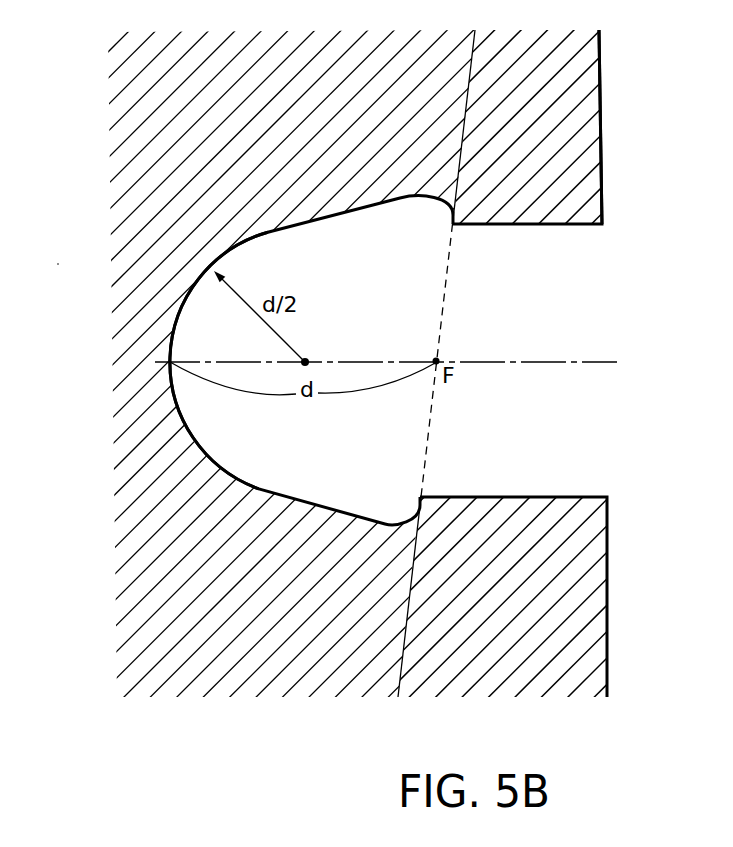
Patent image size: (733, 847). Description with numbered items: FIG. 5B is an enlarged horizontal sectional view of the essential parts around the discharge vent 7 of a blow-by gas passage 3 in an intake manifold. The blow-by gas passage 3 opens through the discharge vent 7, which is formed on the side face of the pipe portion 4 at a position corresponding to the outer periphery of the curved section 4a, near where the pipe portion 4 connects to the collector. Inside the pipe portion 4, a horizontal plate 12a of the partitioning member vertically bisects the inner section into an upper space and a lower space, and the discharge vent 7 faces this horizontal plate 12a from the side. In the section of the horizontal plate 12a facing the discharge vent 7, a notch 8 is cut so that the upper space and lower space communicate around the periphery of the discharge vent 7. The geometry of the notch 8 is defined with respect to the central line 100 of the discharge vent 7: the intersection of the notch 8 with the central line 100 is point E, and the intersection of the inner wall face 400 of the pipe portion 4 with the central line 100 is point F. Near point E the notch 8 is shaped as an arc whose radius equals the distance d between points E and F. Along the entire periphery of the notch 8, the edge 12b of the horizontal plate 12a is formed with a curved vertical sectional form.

The blow-by gas passage 3 is at (568, 225).
The pipe portion 4 is at (612, 48).
The curved section 4a is at (562, 87).
The discharge vent 7 is at (450, 250).
The notch 8 is at (335, 457).
The horizontal plate 12a is at (130, 152).
The edge 12b is at (205, 442).
The central line 100 is at (577, 360).
The inner wall face 400 is at (398, 645).